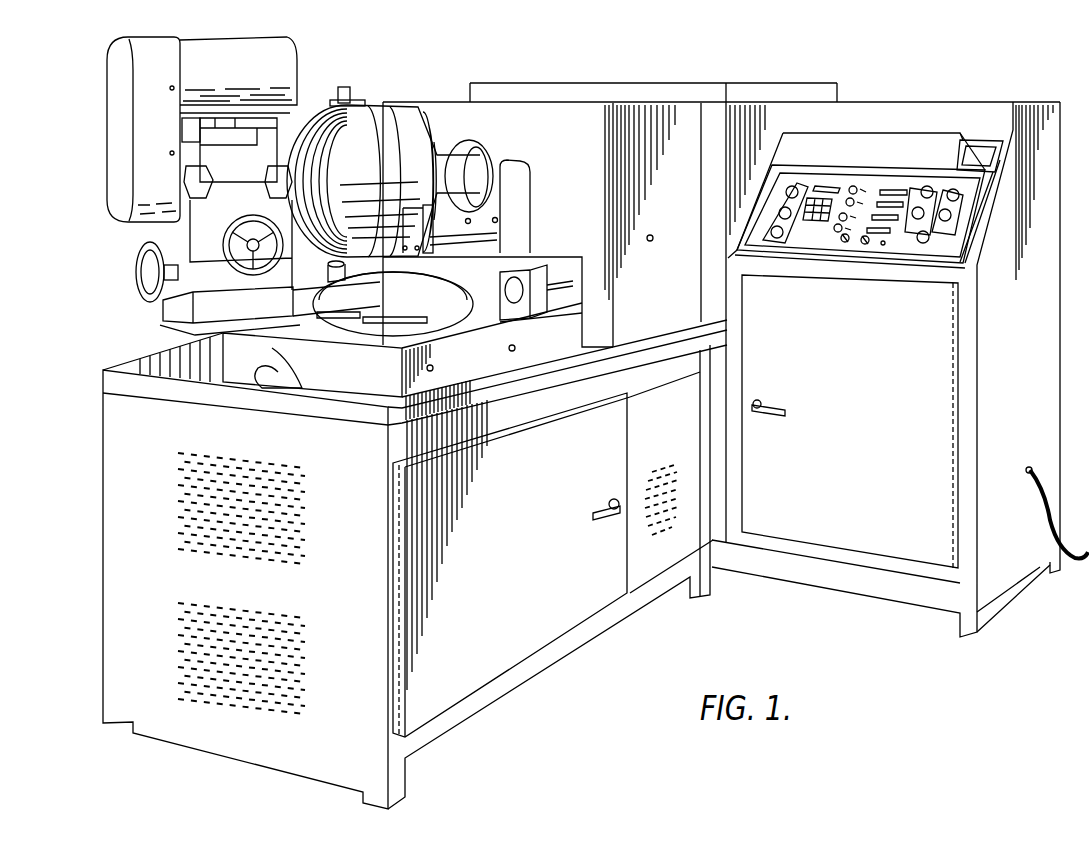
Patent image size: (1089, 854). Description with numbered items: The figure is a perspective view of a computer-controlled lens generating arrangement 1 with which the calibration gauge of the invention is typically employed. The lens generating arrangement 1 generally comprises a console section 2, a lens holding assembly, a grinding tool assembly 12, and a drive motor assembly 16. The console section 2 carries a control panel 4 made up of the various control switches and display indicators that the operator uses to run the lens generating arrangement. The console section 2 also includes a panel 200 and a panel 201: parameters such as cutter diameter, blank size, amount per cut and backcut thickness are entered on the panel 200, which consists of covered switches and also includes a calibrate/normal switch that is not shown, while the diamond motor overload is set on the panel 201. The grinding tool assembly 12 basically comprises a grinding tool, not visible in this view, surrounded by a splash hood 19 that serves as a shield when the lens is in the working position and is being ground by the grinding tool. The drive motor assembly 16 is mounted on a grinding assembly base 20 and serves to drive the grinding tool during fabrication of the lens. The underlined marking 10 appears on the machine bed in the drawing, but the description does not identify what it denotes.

The lens generating arrangement 1 is at (664, 58).
The console section 2 is at (872, 74).
The control panel 4 is at (888, 260).
The machine bed 10 is at (484, 363).
The grinding tool assembly 12 is at (424, 59).
The drive motor assembly 16 is at (298, 49).
The splash hood 19 is at (358, 102).
The grinding assembly base 20 is at (433, 282).
The panel 200 is at (898, 145).
The panel 201 is at (980, 158).